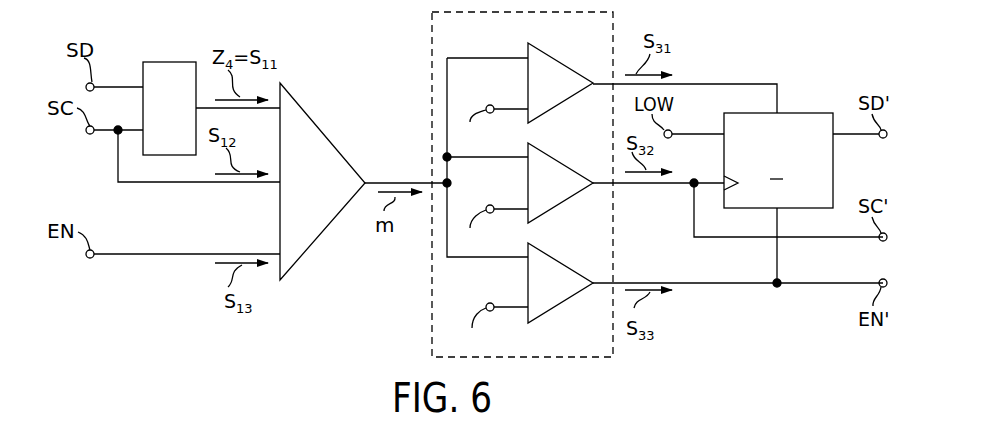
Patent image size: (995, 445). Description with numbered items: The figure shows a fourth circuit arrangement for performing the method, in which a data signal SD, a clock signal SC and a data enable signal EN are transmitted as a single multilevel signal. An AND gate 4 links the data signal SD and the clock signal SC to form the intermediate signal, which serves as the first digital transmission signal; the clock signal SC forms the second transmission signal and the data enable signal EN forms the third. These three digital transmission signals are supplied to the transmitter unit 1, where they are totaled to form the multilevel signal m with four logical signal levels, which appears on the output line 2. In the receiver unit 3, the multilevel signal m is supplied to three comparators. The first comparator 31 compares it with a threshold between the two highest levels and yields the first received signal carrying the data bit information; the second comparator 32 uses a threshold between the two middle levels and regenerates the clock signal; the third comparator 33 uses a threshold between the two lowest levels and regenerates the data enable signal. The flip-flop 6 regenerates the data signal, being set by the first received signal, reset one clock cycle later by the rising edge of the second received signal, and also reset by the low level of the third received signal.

The transmitter unit 1 is at (313, 121).
The summation output signal line 2 is at (381, 178).
The receiver unit 3 is at (432, 341).
The AND gate 4 is at (162, 62).
The flip-flop 6 is at (808, 113).
The first comparator 31 is at (568, 99).
The second comparator 32 is at (568, 199).
The third comparator 33 is at (568, 299).